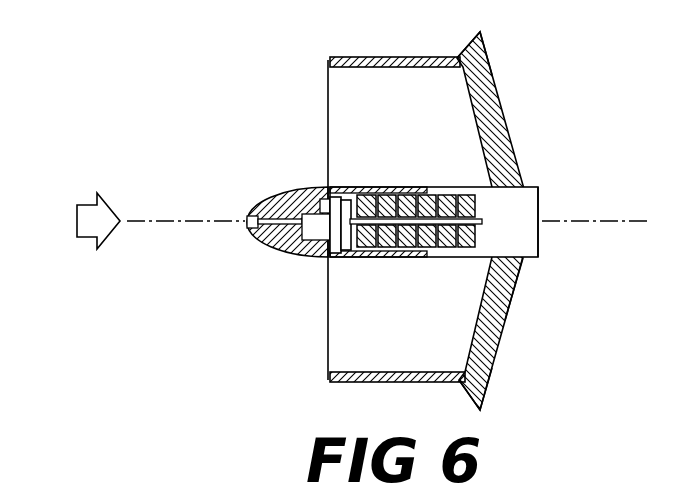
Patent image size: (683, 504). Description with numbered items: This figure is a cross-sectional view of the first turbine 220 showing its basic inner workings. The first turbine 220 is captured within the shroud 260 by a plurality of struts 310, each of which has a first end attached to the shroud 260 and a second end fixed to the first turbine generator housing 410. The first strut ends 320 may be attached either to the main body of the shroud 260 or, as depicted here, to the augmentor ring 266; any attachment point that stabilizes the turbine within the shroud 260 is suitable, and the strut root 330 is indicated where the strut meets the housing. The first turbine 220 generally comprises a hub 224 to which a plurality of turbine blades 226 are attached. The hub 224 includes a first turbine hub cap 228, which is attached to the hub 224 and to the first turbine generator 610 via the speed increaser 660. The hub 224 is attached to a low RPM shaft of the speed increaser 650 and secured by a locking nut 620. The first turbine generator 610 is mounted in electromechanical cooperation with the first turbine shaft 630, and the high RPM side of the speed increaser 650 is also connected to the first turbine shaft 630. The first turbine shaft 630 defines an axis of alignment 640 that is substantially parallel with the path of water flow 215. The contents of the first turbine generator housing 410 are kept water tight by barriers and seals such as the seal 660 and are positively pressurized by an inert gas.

The path of water flow 215 is at (84, 210).
The first turbine 220 is at (292, 80).
The hub 224 is at (405, 185).
The turbine blades 226 is at (353, 345).
The first turbine hub cap 228 is at (290, 257).
The shroud 260 is at (380, 60).
The augmentor ring 266 is at (470, 52).
The struts 310 is at (510, 318).
The first strut ends 320 is at (488, 385).
The fin root 330 is at (520, 270).
The first turbine generator housing 410 is at (525, 238).
The first turbine generator 610 is at (462, 195).
The locking nut 620 is at (272, 242).
The first turbine shaft 630 is at (490, 221).
The axis of alignment 640 is at (635, 221).
The speed increaser 650 is at (326, 207).
The seal 660 is at (322, 258).